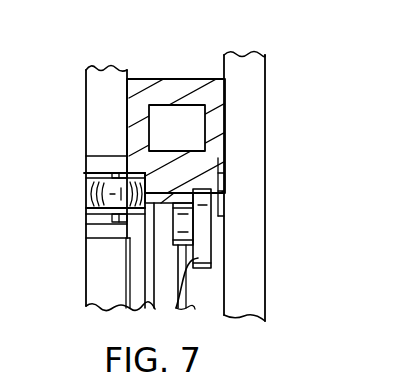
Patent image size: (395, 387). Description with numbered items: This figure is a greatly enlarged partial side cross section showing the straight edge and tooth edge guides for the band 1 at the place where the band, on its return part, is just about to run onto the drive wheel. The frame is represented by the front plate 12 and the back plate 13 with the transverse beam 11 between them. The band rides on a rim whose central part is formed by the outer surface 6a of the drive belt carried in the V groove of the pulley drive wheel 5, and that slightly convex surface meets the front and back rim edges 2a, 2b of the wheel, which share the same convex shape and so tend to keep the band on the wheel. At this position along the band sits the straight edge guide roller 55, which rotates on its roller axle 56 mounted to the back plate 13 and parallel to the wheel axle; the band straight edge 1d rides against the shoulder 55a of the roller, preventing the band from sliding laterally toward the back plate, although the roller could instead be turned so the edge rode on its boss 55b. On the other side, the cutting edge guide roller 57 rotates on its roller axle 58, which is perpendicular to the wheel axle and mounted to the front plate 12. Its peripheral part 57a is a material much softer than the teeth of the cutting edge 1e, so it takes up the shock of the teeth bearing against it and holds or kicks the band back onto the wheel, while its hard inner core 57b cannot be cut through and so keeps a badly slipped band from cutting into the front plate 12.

The transverse beam 11 is at (152, 71).
The front plate 12 is at (78, 112).
The back plate 13 is at (257, 131).
The cutting edge 1e is at (147, 170).
The band 1 is at (238, 157).
The band straight edge 1d is at (190, 194).
The straight edge guide roller 55 is at (230, 196).
The shoulder 55a is at (172, 295).
The boss 55b is at (168, 237).
The roller axle 56 is at (208, 242).
The outer surface of drive belt 6a is at (181, 272).
The pulley drive wheel 5 is at (187, 288).
The front rim edge 2a is at (117, 303).
The back rim edge 2b is at (237, 309).
The cutting edge guide roller 57 is at (74, 196).
The peripheral part 57a is at (106, 186).
The inner core 57b is at (80, 186).
The roller axle 58 is at (108, 212).